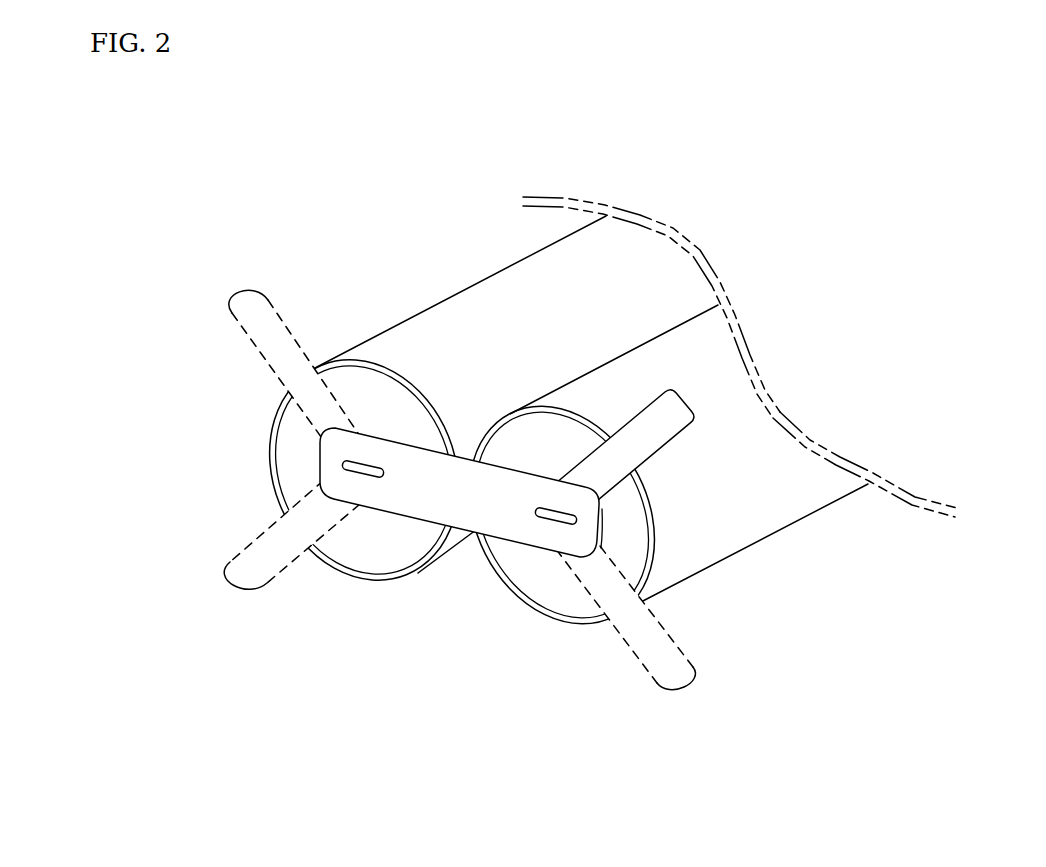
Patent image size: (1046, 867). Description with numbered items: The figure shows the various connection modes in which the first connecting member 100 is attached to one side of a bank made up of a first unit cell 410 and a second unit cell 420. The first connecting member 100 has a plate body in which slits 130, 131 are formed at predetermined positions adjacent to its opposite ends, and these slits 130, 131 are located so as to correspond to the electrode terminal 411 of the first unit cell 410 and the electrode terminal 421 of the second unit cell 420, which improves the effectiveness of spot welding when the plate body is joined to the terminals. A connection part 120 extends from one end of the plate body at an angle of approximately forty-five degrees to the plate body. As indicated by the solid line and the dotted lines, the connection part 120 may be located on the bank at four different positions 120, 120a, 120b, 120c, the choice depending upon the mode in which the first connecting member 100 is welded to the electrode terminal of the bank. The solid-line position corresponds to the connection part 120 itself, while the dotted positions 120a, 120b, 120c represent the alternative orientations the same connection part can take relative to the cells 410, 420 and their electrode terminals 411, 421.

The first connecting member 100 is at (490, 240).
The connection part 120 is at (645, 427).
The connection part position 120a is at (250, 313).
The connection part position 120b is at (242, 562).
The connection part position 120c is at (673, 663).
The slit 130 is at (538, 540).
The slit 131 is at (650, 521).
The first unit cell 410 is at (605, 240).
The electrode terminal 411 is at (283, 460).
The second unit cell 420 is at (747, 438).
The electrode terminal 421 is at (533, 602).